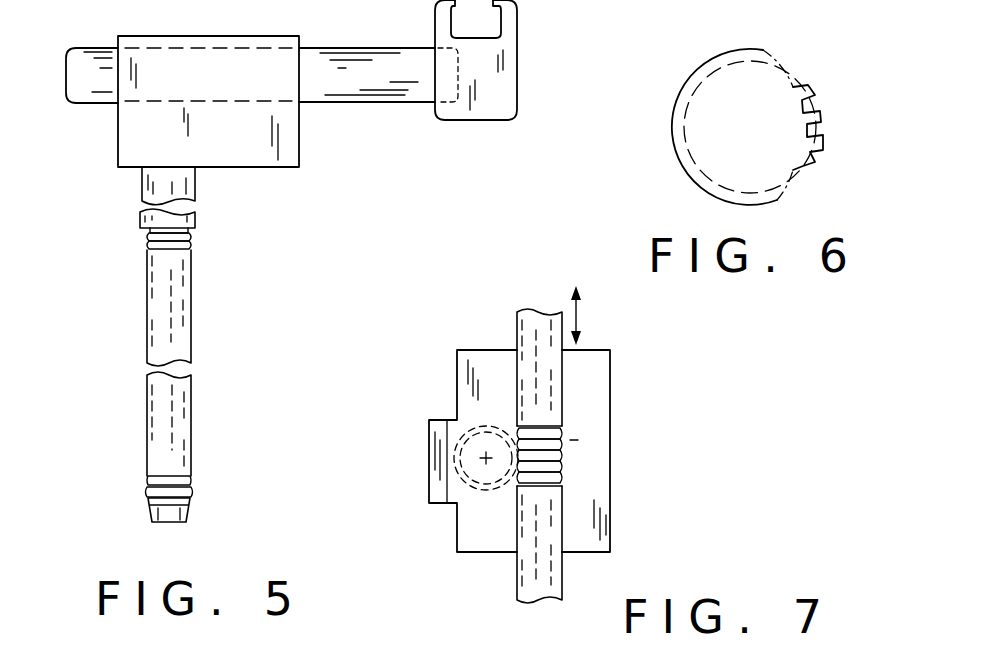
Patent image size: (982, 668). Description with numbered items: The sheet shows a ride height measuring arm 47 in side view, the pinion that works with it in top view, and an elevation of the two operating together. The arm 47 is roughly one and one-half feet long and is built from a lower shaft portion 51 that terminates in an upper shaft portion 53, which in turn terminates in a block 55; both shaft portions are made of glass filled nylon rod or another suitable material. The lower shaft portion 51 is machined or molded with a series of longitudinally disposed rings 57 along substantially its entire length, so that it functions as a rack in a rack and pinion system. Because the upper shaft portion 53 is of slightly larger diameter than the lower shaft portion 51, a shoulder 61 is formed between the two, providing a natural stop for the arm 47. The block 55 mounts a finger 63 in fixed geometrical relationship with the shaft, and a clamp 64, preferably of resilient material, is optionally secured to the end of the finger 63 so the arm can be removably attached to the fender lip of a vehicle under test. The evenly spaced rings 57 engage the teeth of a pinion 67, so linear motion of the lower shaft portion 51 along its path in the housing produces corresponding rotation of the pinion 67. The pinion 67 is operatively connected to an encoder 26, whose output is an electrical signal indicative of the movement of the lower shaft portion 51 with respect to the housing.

In FIG. 7, the encoder 26 is at (438, 483).
In FIG. 5, the arm 47 is at (104, 191).
In FIG. 5, the lower shaft portion 51 is at (200, 328).
In FIG. 7, the lower shaft portion 51 is at (572, 398).
In FIG. 5, the upper shaft portion 53 is at (198, 218).
In FIG. 5, the block 55 is at (237, 91).
In FIG. 6, the block 55 is at (815, 95).
In FIG. 5, the rings 57 is at (190, 237).
In FIG. 7, the rings 57 is at (563, 433).
In FIG. 5, the shoulder 61 is at (148, 233).
In FIG. 5, the finger 63 is at (364, 103).
In FIG. 5, the clamp 64 is at (500, 80).
In FIG. 6, the pinion 67 is at (760, 136).
In FIG. 7, the pinion 67 is at (484, 478).